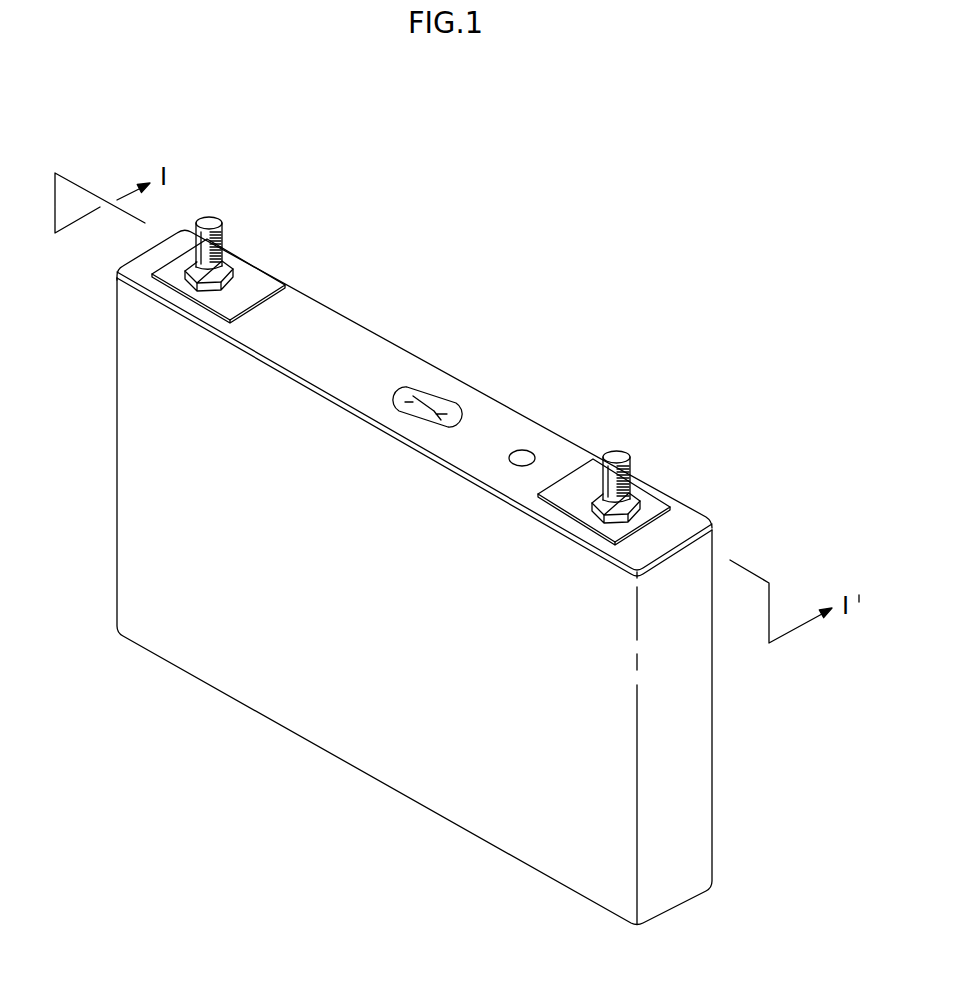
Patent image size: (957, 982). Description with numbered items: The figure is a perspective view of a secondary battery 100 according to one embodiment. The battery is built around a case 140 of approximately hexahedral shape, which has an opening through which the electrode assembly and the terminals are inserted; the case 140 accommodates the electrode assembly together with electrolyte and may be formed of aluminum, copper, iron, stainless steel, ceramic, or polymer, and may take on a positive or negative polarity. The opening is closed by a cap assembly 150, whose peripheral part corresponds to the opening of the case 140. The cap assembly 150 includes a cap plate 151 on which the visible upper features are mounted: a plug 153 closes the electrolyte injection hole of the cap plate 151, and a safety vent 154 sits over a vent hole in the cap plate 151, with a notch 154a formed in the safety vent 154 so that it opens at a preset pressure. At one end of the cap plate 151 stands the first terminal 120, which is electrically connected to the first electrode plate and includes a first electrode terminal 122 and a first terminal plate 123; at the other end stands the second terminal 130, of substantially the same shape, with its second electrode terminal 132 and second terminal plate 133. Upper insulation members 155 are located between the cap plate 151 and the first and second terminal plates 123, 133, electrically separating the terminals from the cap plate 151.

The secondary battery 100 is at (689, 191).
The first terminal 120 is at (241, 209).
The first electrode terminal 122 is at (204, 204).
The first terminal plate 123 is at (239, 251).
The second terminal 130 is at (645, 441).
The second electrode terminal 132 is at (611, 434).
The second terminal plate 133 is at (643, 481).
The case 140 is at (352, 748).
The cap assembly 150 is at (414, 399).
The cap plate 151 is at (318, 310).
The plug 153 is at (524, 452).
The safety vent 154 is at (465, 355).
The notch 154a is at (437, 413).
The upper insulation members 155 is at (272, 285).